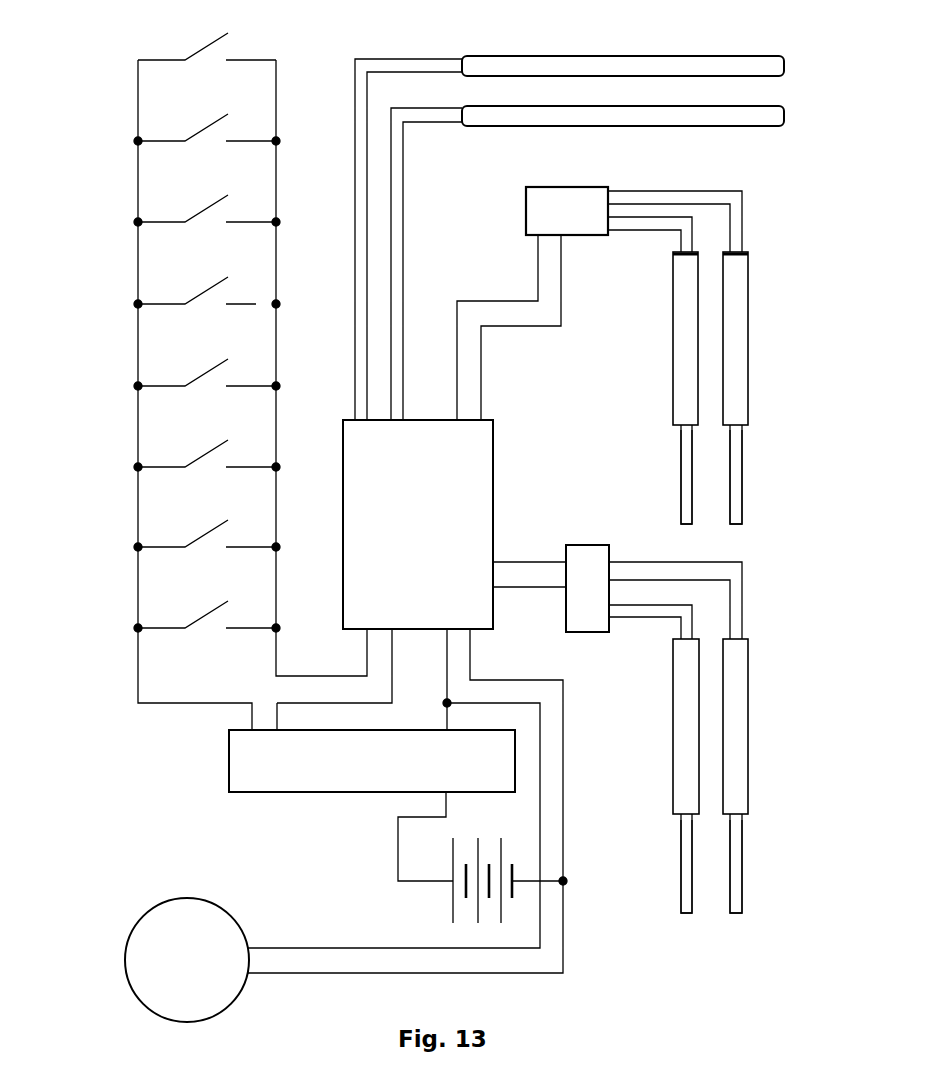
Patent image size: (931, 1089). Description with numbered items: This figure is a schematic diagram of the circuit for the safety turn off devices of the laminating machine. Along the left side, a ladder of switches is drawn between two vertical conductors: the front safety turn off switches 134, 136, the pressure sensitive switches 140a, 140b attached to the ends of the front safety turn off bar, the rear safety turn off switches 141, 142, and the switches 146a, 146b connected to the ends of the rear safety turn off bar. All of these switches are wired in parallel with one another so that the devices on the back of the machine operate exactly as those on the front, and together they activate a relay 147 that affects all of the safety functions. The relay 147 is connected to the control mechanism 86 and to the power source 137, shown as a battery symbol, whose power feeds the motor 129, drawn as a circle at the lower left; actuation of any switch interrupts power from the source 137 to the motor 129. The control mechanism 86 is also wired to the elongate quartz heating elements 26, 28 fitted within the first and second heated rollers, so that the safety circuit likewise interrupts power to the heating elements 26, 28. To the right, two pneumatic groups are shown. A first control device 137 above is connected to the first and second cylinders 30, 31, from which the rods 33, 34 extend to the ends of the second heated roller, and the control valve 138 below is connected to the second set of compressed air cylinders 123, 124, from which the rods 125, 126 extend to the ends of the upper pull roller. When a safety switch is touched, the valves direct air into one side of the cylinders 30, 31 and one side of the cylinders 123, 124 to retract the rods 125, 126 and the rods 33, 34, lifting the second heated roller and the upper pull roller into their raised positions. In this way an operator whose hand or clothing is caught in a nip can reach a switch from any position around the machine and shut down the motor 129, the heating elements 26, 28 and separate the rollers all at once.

The safety turn off switch 134 is at (205, 44).
The safety turn off switch 136 is at (202, 131).
The pressure sensitive switch 140a is at (202, 212).
The pressure sensitive switch 140b is at (202, 294).
The safety turn off switch 141 is at (202, 376).
The safety turn off switch 142 is at (202, 457).
The switch 146a is at (202, 537).
The switch 146b is at (202, 618).
The control mechanism 86 is at (436, 529).
The quartz heating element 26 is at (784, 68).
The quartz heating element 28 is at (784, 118).
The source 137 is at (575, 186).
The first cylinder 30 is at (673, 341).
The second cylinder 31 is at (748, 337).
The rod 34 is at (742, 455).
The rod 33 is at (693, 524).
The control valve 138 is at (570, 545).
The compressed air cylinder 123 is at (673, 728).
The compressed air cylinder 124 is at (748, 728).
The rod 126 is at (742, 868).
The rod 125 is at (692, 908).
The relay 147 is at (402, 773).
The motor 129 is at (209, 972).